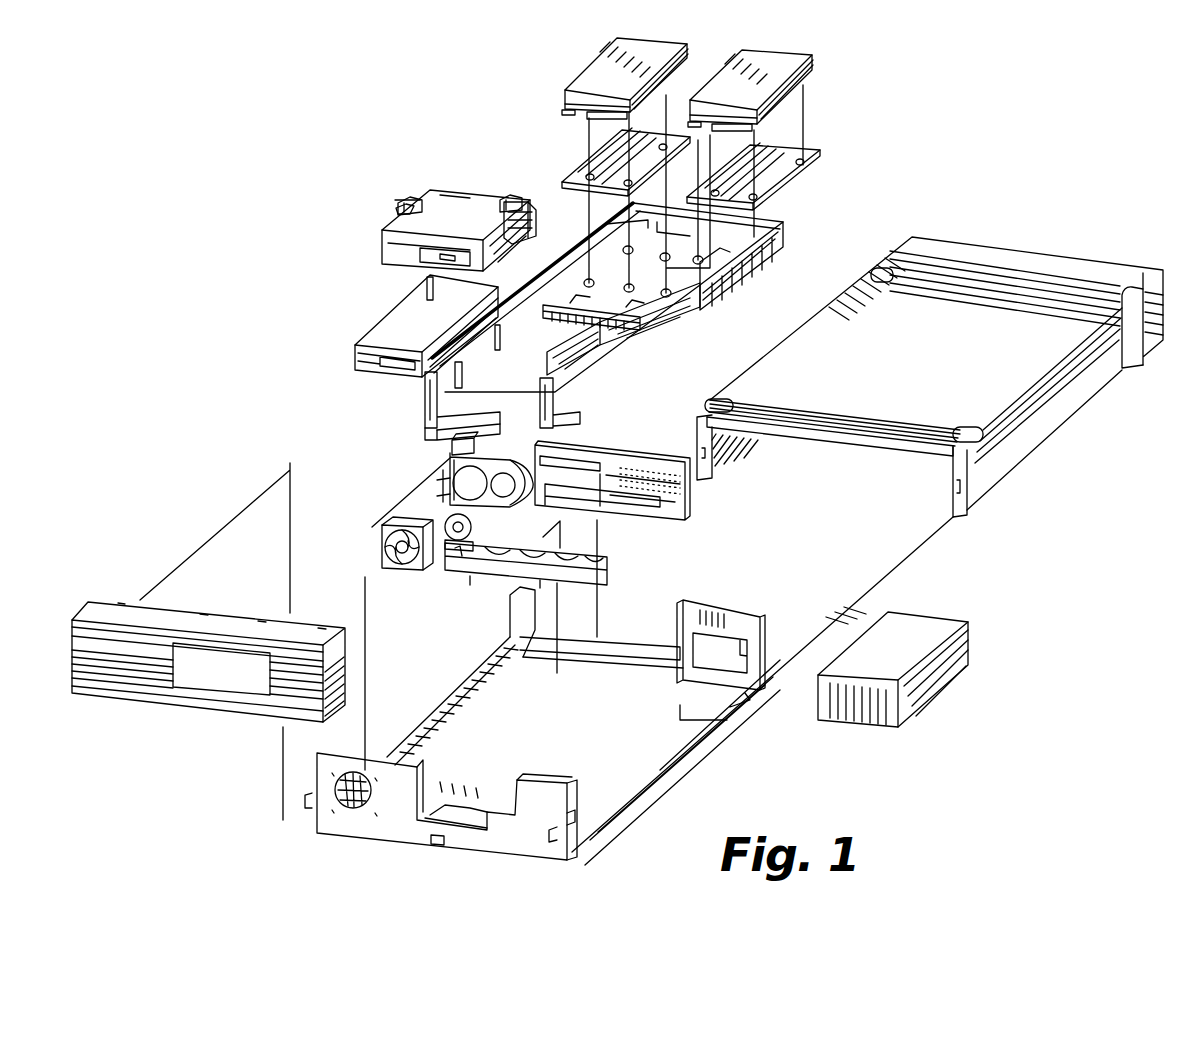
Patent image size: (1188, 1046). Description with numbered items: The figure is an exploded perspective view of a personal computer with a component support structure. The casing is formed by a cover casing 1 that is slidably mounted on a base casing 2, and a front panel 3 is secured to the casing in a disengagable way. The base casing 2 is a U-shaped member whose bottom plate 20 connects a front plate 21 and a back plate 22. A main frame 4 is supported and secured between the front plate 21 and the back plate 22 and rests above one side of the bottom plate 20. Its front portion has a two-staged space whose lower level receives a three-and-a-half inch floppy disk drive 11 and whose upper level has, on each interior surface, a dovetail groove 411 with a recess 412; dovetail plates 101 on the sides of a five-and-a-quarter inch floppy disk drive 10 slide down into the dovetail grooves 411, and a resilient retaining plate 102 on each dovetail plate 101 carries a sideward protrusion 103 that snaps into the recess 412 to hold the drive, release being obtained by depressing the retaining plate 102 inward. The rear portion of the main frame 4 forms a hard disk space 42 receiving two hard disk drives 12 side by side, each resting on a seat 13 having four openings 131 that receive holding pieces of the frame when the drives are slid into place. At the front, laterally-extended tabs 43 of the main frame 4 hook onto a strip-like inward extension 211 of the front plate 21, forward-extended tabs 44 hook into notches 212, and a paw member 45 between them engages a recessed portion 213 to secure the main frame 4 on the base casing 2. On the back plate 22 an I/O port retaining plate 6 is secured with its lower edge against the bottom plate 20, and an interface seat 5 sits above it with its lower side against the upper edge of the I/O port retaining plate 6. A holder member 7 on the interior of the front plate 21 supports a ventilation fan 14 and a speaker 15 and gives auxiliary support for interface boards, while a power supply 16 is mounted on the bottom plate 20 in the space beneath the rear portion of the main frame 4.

The cover casing 1 is at (840, 427).
The base casing 2 is at (705, 750).
The front panel 3 is at (185, 715).
The main frame 4 is at (718, 297).
The interface seat 5 is at (641, 517).
The I/O port retaining plate 6 is at (476, 572).
The holder member 7 is at (515, 498).
The 5¼" floppy disk drive 10 is at (463, 196).
The 3½" floppy disk drive 11 is at (402, 318).
The hard disk drive 12 is at (583, 78).
The hard disk seat 13 is at (588, 190).
The ventilation fan 14 is at (380, 532).
The speaker 15 is at (472, 524).
The power supply 16 is at (928, 618).
The bottom plate 20 is at (660, 770).
The front plate 21 is at (360, 824).
The back plate 22 is at (706, 604).
The hard disk space 42 is at (683, 300).
The laterally-extended tab 43 is at (428, 390).
The forward-extended tab 44 is at (427, 428).
The paw member 45 is at (450, 446).
The dovetail plate 101 is at (505, 243).
The retaining plate 102 is at (404, 196).
The sideward protrusion 103 is at (400, 209).
The opening 131 is at (604, 142).
The strip-like inward extension 211 is at (423, 760).
The notch 212 is at (460, 808).
The recessed portion 213 is at (436, 848).
The dovetail groove 411 is at (496, 358).
The recess 412 is at (572, 364).